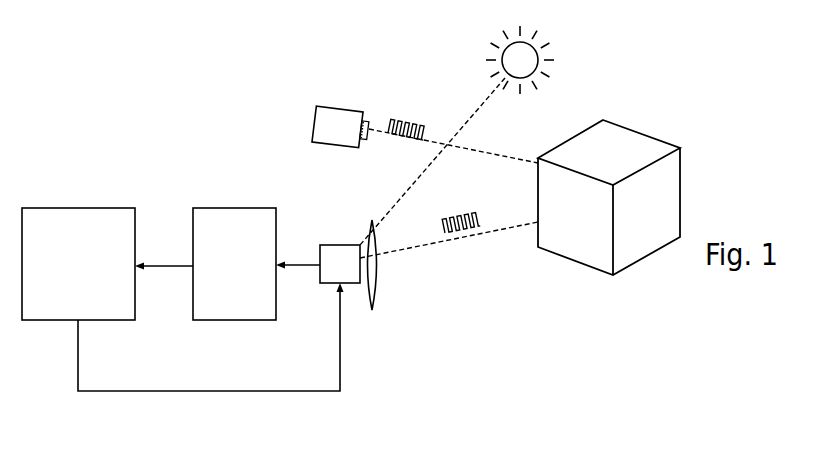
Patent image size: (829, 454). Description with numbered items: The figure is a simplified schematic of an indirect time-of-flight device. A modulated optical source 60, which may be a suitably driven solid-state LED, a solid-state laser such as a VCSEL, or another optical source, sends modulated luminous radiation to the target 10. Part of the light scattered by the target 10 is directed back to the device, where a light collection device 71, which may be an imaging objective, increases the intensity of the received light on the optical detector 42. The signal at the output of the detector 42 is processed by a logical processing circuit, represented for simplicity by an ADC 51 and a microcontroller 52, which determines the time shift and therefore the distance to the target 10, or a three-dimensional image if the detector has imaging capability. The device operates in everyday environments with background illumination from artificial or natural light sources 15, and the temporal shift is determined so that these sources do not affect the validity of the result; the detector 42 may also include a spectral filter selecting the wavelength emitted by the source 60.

The target 10 is at (613, 125).
The light sources 15 is at (498, 48).
The optical detector 42 is at (342, 258).
The ADC 51 is at (270, 318).
The microcontroller 52 is at (128, 318).
The modulated optical source 60 is at (338, 107).
The light collection device 71 is at (375, 295).